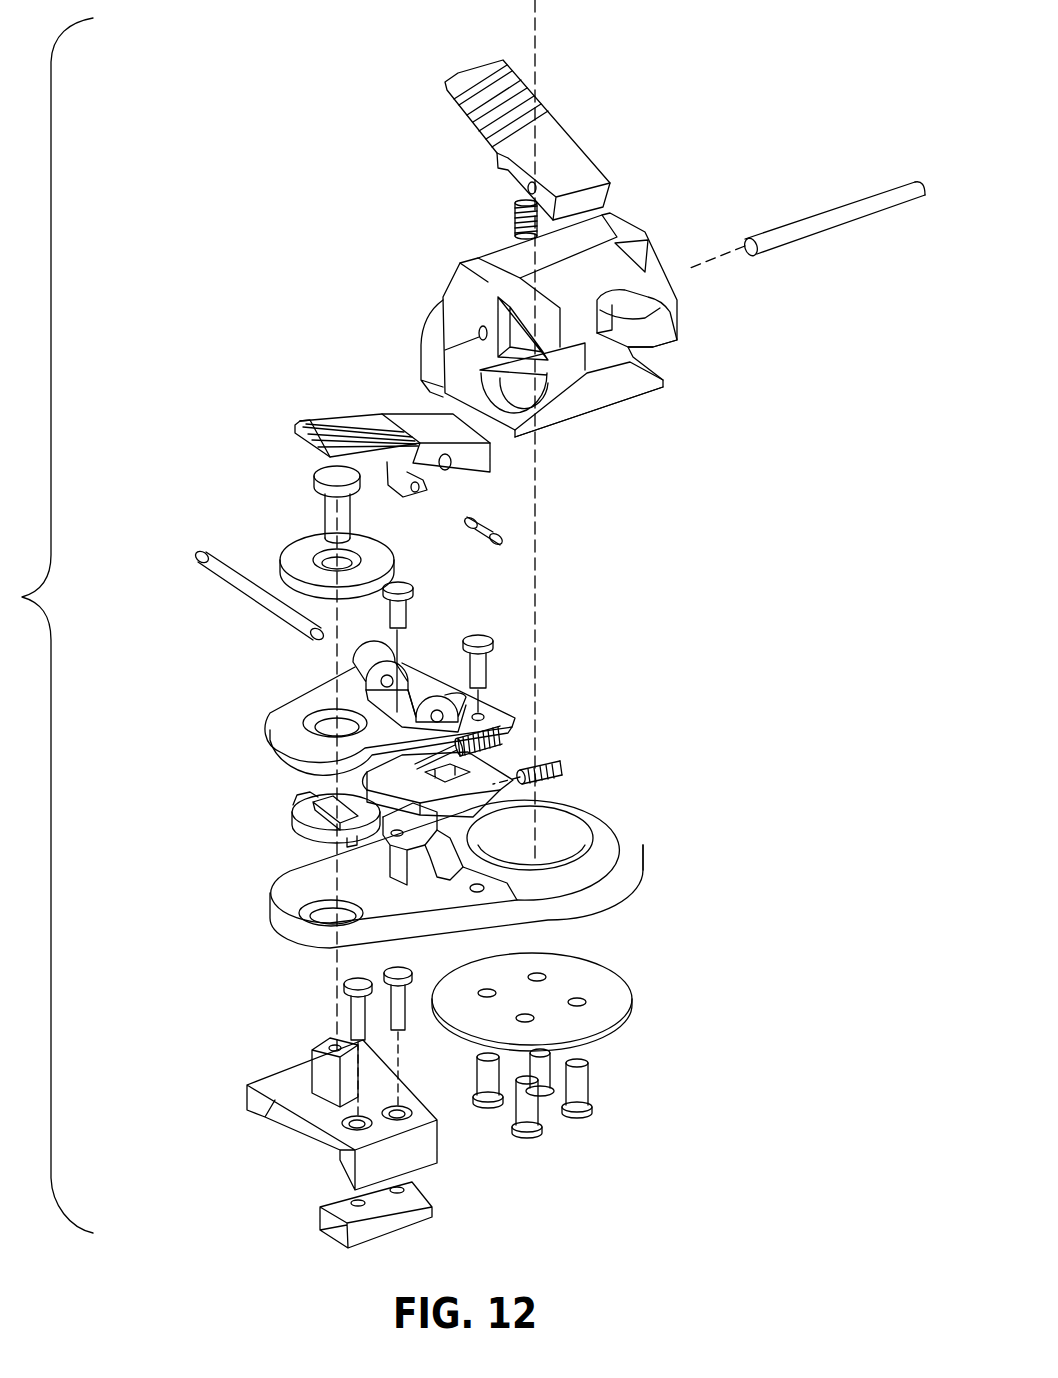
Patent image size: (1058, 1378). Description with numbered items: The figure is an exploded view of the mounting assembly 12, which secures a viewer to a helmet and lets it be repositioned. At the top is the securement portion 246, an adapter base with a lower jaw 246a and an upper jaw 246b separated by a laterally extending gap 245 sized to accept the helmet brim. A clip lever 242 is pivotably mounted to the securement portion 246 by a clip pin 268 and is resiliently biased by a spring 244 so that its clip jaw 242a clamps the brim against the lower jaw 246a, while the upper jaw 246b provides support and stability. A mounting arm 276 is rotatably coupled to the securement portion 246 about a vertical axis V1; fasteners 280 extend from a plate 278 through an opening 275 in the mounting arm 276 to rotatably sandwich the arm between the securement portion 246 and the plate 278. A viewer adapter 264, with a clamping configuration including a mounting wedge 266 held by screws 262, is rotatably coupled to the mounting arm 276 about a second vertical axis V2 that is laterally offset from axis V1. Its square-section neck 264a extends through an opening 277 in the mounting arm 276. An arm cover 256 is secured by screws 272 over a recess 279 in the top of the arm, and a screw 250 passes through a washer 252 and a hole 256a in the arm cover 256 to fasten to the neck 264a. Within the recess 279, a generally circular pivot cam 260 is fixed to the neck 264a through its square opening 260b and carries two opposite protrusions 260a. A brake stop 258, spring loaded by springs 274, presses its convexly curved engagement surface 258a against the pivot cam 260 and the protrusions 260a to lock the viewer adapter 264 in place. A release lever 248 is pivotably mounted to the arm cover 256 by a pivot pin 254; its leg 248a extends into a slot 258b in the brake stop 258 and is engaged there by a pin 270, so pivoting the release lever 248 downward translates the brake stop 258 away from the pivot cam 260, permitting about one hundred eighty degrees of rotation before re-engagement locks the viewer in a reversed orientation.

The mounting assembly 12 is at (779, 102).
The clip lever 242 is at (470, 113).
The clip jaw 242a is at (585, 147).
The spring 244 is at (513, 230).
The gap 245 is at (672, 361).
The securement portion 246 is at (472, 285).
The lower jaw 246a is at (633, 406).
The upper jaw 246b is at (678, 318).
The release lever 248 is at (398, 412).
The leg 248a is at (430, 488).
The screw 250 is at (320, 468).
The washer 252 is at (293, 543).
The pivot pin 254 is at (240, 597).
The arm cover 256 is at (322, 683).
The hole 256a is at (318, 713).
The brake stop 258 is at (510, 758).
The engagement surface 258a is at (370, 773).
The slot 258b is at (482, 752).
The pivot cam 260 is at (293, 823).
The protrusions 260a is at (303, 791).
The opening 260b is at (312, 808).
The screws 262 is at (350, 975).
The viewer adapter 264 is at (248, 1110).
The neck 264a is at (310, 1047).
The mounting wedge 266 is at (322, 1207).
The clip pin 268 is at (840, 210).
The pin 270 is at (503, 542).
The screws 272 is at (405, 617).
The springs 274 is at (562, 768).
The opening 275 is at (583, 833).
The mounting arm 276 is at (640, 868).
The opening 277 is at (278, 898).
The plate 278 is at (620, 992).
The recess 279 is at (296, 870).
The fasteners 280 is at (590, 1090).
The axis V1 is at (540, 31).
The axis V2 is at (335, 1003).